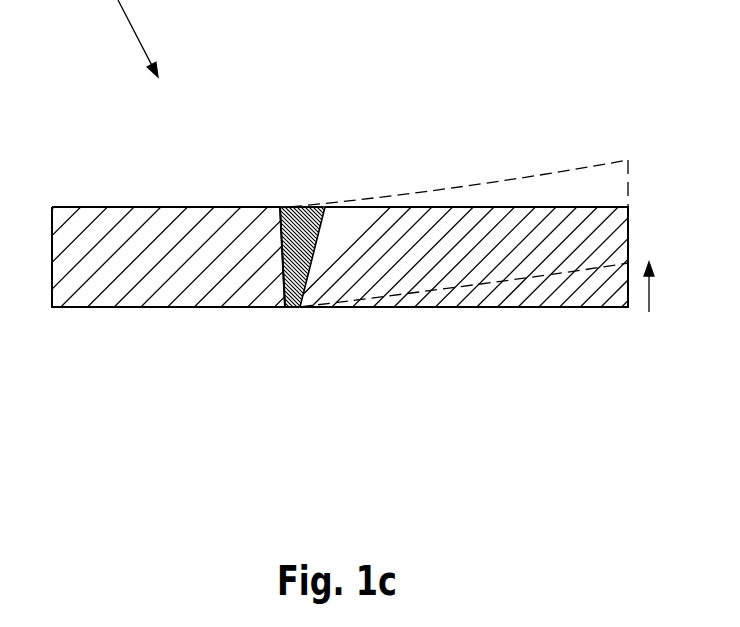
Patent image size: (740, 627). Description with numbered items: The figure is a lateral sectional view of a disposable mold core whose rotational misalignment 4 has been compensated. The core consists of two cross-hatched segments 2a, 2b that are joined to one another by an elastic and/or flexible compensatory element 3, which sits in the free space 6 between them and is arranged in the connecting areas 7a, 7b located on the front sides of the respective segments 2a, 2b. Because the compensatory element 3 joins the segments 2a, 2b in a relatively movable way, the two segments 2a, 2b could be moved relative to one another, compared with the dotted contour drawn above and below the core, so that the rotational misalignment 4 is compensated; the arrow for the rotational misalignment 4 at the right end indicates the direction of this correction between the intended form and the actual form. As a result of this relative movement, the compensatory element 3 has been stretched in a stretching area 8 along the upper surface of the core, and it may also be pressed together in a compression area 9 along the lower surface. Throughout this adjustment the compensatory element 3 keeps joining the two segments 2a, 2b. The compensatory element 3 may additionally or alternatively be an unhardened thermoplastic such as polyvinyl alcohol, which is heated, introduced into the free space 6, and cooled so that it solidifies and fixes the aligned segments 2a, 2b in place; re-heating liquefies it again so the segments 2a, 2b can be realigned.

The segment 2a is at (99, 242).
The segment 2b is at (472, 247).
The compensatory element 3 is at (303, 205).
The rotational misalignment 4 is at (650, 290).
The free space 6 is at (296, 349).
The connecting area 7a is at (283, 265).
The connecting area 7b is at (318, 252).
The stretching area 8 is at (256, 190).
The compression area 9 is at (326, 325).